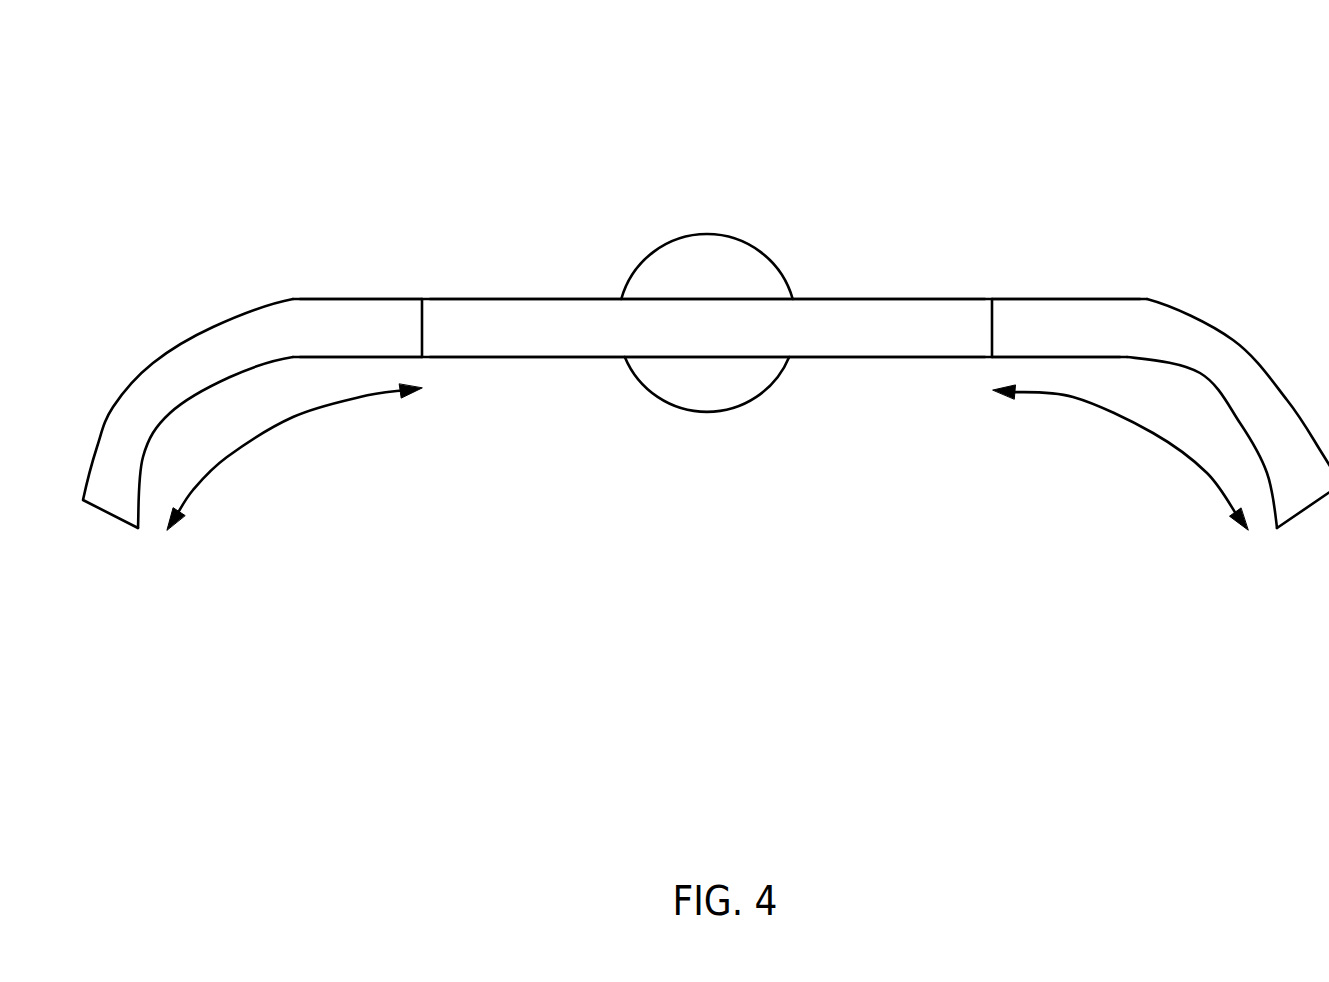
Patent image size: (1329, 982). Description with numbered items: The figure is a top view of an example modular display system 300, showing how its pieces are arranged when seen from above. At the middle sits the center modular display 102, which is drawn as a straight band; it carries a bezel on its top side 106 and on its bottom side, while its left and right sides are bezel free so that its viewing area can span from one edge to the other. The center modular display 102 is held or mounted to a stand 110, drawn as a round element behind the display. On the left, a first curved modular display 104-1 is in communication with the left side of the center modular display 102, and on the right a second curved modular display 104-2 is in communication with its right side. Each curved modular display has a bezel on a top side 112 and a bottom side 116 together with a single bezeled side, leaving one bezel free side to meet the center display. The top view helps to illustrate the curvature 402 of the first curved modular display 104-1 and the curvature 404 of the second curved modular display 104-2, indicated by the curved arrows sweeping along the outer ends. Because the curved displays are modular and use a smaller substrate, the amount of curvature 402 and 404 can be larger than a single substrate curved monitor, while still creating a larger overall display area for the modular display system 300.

The modular display system 300 is at (103, 45).
The center modular display 102 is at (900, 299).
The first curved modular display 104-1 is at (377, 298).
The second curved modular display 104-2 is at (1037, 298).
The top side 106 is at (834, 311).
The stand 110 is at (702, 233).
The top side 112 is at (288, 325).
The bottom side 116 is at (1140, 326).
The curvature 402 is at (260, 430).
The curvature 404 is at (1155, 435).